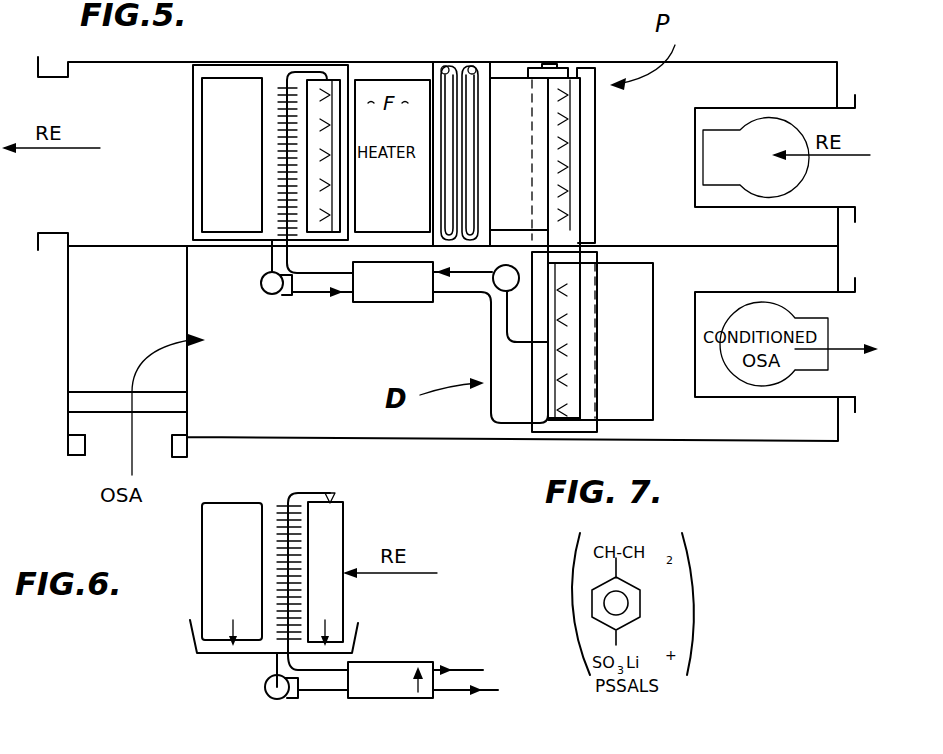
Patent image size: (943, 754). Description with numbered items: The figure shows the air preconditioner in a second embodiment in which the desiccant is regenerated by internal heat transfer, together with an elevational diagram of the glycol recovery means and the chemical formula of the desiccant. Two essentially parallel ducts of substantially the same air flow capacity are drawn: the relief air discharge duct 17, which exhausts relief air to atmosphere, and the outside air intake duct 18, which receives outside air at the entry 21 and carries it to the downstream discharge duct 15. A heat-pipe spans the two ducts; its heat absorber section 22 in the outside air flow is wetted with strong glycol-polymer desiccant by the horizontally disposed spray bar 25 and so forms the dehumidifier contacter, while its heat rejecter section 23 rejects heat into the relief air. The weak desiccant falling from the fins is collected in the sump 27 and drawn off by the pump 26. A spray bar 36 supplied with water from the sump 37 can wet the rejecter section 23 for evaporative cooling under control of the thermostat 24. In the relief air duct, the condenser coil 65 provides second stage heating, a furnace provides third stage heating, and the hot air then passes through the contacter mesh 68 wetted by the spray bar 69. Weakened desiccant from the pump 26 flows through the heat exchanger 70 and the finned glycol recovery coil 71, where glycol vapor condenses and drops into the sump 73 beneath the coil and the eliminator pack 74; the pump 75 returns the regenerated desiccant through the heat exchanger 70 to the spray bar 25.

In FIG. 5, the downstream discharge duct 15 is at (850, 402).
In FIG. 5, the relief air discharge duct 17 is at (674, 165).
In FIG. 5, the OSA intake duct 18 is at (378, 357).
In FIG. 5, the outside air entry 21 is at (97, 448).
In FIG. 5, the heat absorber section 22 is at (580, 350).
In FIG. 5, the heat rejecter section 23 is at (578, 135).
In FIG. 5, the thermostat 24 is at (548, 64).
In FIG. 5, the spray bar 25 is at (560, 395).
In FIG. 5, the pump 26 is at (490, 298).
In FIG. 5, the sump 27 is at (600, 307).
In FIG. 5, the spray bar 36 is at (572, 193).
In FIG. 5, the sump 37 is at (595, 110).
In FIG. 5, the condenser coil 65 is at (478, 82).
In FIG. 5, the contacter mesh 68 is at (340, 198).
In FIG. 6, the contacter mesh 68 is at (325, 530).
In FIG. 5, the spray bar 69 is at (332, 170).
In FIG. 6, the spray bar 69 is at (335, 494).
In FIG. 5, the heat exchanger 70 is at (383, 302).
In FIG. 6, the heat exchanger 70 is at (398, 670).
In FIG. 5, the glycol recovery coil 71 is at (278, 85).
In FIG. 6, the glycol recovery coil 71 is at (280, 508).
In FIG. 5, the sump 73 is at (193, 217).
In FIG. 6, the sump 73 is at (190, 640).
In FIG. 5, the eliminator pack 74 is at (218, 152).
In FIG. 6, the eliminator pack 74 is at (222, 540).
In FIG. 5, the pump 75 is at (260, 288).
In FIG. 6, the pump 75 is at (265, 688).